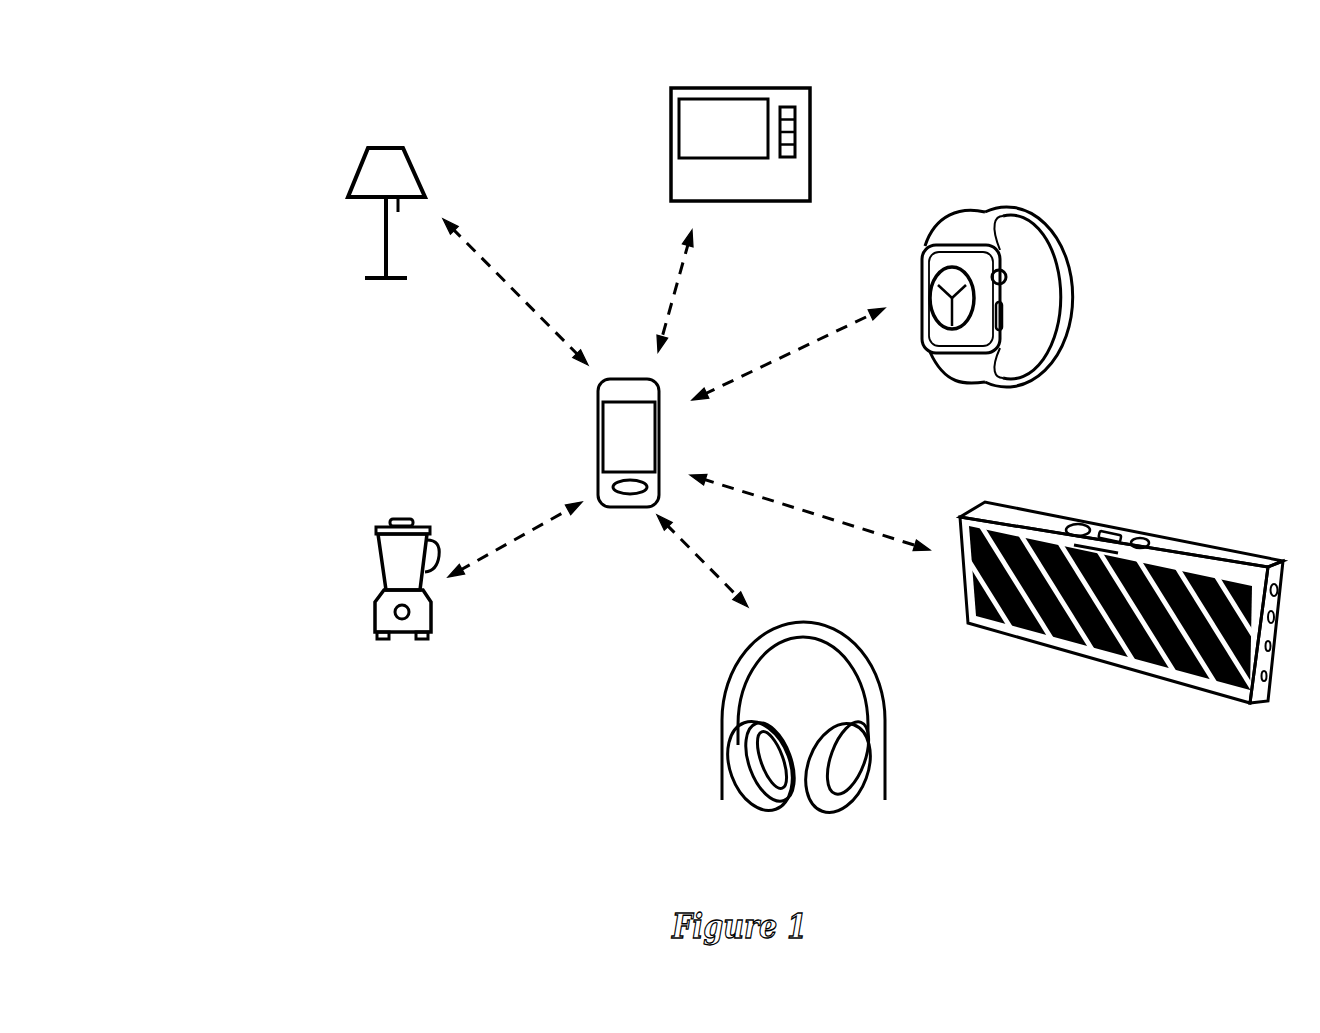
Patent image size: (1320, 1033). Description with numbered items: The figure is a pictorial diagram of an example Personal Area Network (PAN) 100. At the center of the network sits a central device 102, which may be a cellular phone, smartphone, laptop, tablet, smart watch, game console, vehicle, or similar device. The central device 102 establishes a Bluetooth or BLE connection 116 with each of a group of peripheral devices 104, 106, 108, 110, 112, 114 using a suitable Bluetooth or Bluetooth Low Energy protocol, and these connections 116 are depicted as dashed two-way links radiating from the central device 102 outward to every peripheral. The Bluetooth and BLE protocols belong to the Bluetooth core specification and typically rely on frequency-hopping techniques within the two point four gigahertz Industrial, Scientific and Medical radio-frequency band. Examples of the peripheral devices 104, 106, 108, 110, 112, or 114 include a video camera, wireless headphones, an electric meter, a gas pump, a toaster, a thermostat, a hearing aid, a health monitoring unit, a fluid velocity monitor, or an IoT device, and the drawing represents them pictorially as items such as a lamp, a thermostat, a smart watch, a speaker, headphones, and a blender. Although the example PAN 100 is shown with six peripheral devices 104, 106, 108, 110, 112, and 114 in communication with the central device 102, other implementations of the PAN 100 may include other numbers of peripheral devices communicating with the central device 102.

The Personal Area Network (PAN) 100 is at (208, 68).
The central device 102 is at (598, 452).
The peripheral device 104 is at (970, 210).
The peripheral device 106 is at (1123, 667).
The peripheral device 108 is at (865, 806).
The peripheral device 110 is at (403, 641).
The peripheral device 112 is at (414, 166).
The peripheral device 114 is at (812, 136).
The Bluetooth or BLE connection 116 is at (537, 312).